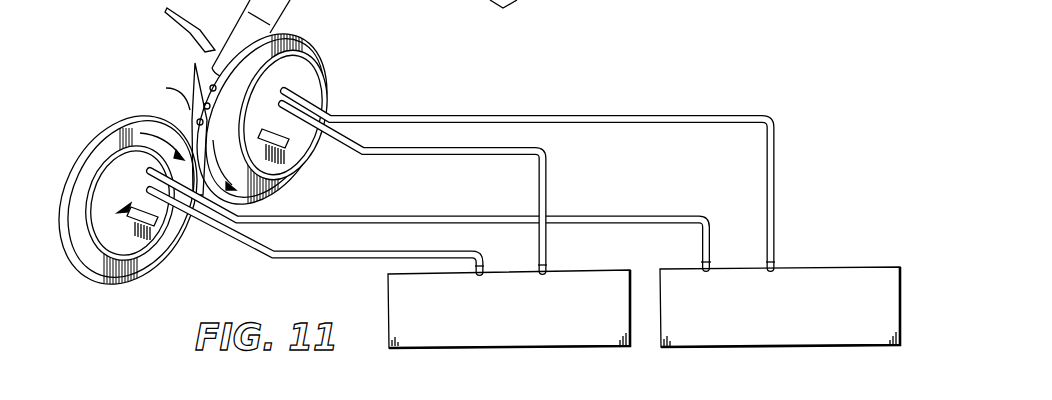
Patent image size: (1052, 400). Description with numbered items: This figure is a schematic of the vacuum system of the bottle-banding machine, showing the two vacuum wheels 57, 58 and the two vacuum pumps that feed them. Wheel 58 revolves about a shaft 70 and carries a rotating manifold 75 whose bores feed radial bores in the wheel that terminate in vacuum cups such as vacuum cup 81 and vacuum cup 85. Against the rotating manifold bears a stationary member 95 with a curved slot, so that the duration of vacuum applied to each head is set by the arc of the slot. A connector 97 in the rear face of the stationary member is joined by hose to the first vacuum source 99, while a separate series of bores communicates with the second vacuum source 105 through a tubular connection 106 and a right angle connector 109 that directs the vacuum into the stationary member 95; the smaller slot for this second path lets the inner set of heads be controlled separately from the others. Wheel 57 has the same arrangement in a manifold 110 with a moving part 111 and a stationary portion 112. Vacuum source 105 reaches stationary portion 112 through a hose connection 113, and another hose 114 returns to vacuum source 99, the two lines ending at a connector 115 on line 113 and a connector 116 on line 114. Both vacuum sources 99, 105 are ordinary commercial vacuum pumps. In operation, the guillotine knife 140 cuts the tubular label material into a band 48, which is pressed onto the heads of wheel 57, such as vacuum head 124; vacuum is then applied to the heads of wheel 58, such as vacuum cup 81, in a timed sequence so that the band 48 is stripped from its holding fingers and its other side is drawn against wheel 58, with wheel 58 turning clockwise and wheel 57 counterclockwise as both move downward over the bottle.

The band 48 is at (157, 91).
The wheel 57 is at (85, 282).
The wheel 58 is at (263, 119).
The shaft 70 is at (288, 138).
The manifold 75 is at (242, 85).
The vacuum cup 81 is at (203, 82).
The vacuum cup 85 is at (497, 19).
The stationary member 95 is at (270, 97).
The connector 97 is at (292, 97).
The vacuum source 99 is at (388, 300).
The vacuum source 105 is at (817, 267).
The tubular connection 106 is at (772, 142).
The right angle connector 109 is at (302, 87).
The manifold 110 is at (126, 201).
The moving part 111 is at (103, 190).
The stationary portion 112 is at (143, 255).
The hose connection 113 is at (605, 214).
The hose 114 is at (288, 256).
The connector 115 is at (147, 177).
The connector 116 is at (148, 186).
The vacuum head 124 is at (172, 109).
The guillotine knife 140 is at (168, 22).